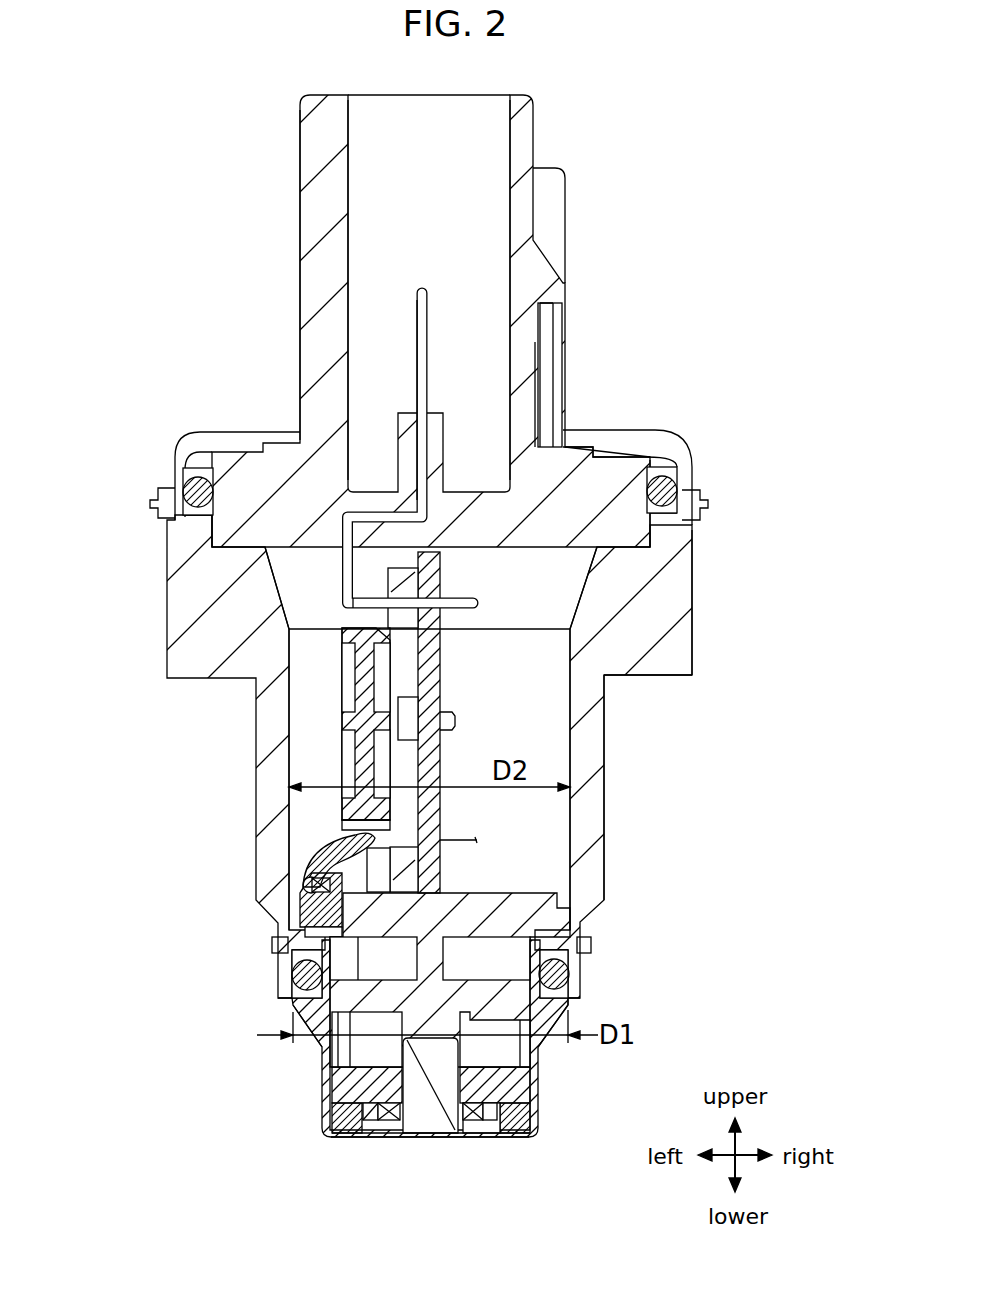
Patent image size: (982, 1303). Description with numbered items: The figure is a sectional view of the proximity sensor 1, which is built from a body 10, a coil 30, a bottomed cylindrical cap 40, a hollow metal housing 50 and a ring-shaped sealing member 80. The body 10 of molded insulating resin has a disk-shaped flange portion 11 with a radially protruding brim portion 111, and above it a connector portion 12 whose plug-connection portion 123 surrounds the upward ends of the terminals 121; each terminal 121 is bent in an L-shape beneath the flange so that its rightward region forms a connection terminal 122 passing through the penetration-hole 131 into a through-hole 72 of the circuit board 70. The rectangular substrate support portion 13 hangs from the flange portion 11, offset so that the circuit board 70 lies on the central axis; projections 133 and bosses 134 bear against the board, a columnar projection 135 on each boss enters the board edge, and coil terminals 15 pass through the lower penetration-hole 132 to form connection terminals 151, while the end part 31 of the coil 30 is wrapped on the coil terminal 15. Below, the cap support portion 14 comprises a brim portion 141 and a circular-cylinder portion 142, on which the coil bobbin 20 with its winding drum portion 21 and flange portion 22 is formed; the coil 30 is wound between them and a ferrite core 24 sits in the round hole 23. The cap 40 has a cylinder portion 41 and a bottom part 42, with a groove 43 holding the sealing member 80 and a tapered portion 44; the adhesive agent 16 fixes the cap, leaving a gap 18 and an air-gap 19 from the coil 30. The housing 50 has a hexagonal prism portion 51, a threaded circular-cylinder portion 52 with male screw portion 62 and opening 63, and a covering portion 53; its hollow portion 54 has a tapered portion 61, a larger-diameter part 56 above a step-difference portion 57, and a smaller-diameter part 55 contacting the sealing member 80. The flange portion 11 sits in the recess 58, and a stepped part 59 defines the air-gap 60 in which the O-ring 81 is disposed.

The proximity sensor 1 is at (712, 196).
The body 10 is at (305, 312).
The flange portion 11 is at (583, 455).
The connector portion 12 is at (318, 217).
The substrate support portion 13 is at (295, 695).
The cap support portion 14 is at (501, 961).
The coil terminal 15 is at (305, 880).
The adhesive agent 16 is at (520, 1118).
The gap 18 is at (515, 1112).
The air-gap 19 is at (505, 1115).
The coil bobbin 20 is at (360, 1159).
The winding drum portion 21 is at (382, 1140).
The flange portion 22 is at (370, 1125).
The round hole 23 is at (478, 1090).
The core 24 is at (430, 1135).
The coil 30 is at (360, 1127).
The end part 31 is at (318, 895).
The cap 40 is at (431, 1082).
The cylinder portion 41 is at (325, 1057).
The bottom part 42 is at (455, 1137).
The groove 43 is at (300, 983).
The tapered portion 44 is at (542, 1043).
The housing 50 is at (673, 675).
The hexagonal prism portion 51 is at (693, 646).
The circular-cylinder portion 52 is at (575, 970).
The covering portion 53 is at (183, 470).
The hollow portion 54 is at (605, 692).
The smaller-diameter part 55 is at (578, 997).
The larger-diameter part 56 is at (570, 757).
The step-difference portion 57 is at (591, 943).
The recess 58 is at (242, 547).
The stepped part 59 is at (708, 505).
The air-gap 60 is at (670, 477).
The tapered portion 61 is at (577, 592).
The male screw portion 62 is at (605, 770).
The opening 63 is at (568, 1008).
The circuit board 70 is at (437, 812).
The through-hole 72 is at (427, 615).
The sealing member 80 is at (555, 962).
The O-ring 81 is at (672, 493).
The brim portion 111 is at (661, 457).
The terminal 121 is at (427, 316).
The connection terminal 122 is at (451, 448).
The plug-connection portion 123 is at (527, 130).
The penetration-hole 131 is at (365, 625).
The penetration-hole 132 is at (347, 827).
The projection 133 is at (412, 862).
The boss 134 is at (410, 708).
The columnar projection 135 is at (455, 720).
The brim portion 141 is at (548, 903).
The circular-cylinder portion 142 is at (522, 1078).
The connection terminal 151 is at (480, 840).